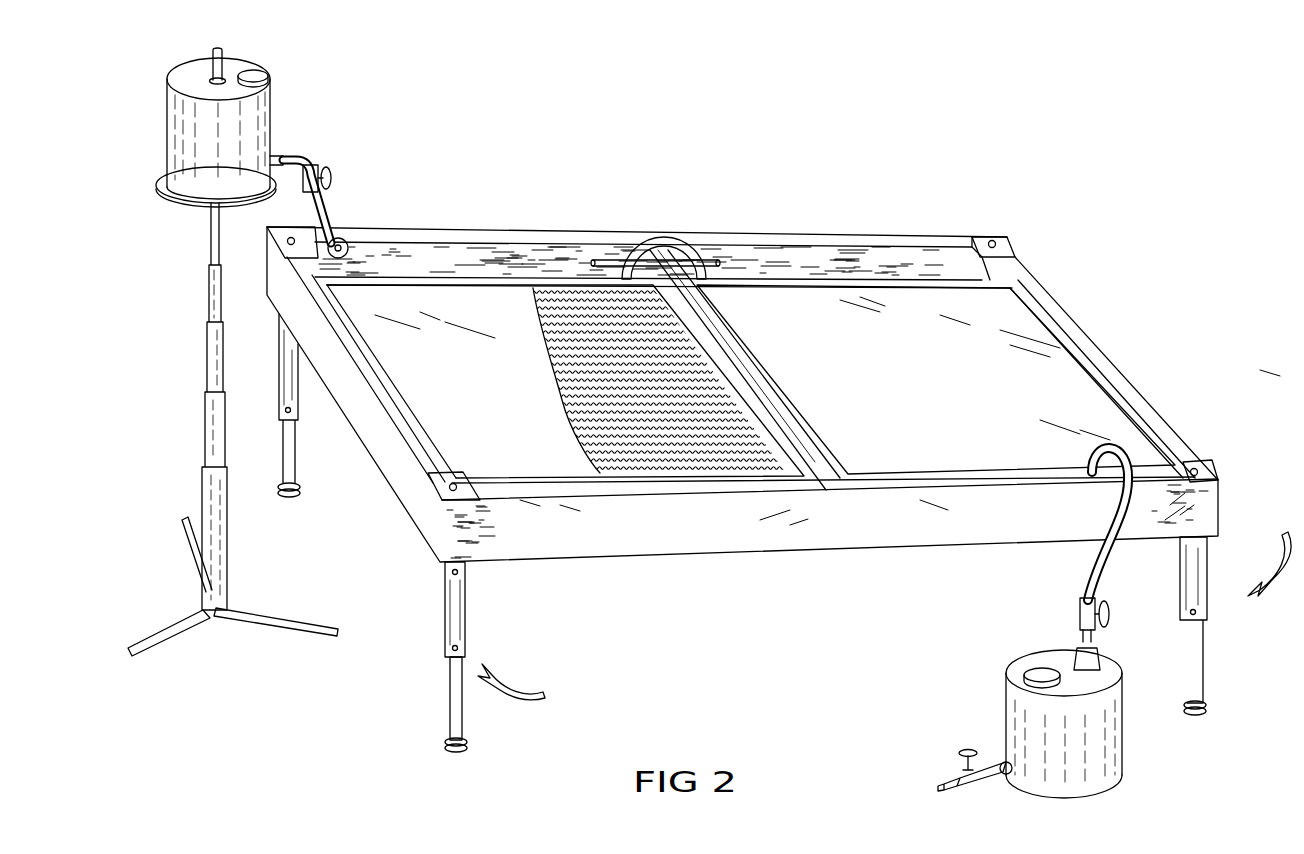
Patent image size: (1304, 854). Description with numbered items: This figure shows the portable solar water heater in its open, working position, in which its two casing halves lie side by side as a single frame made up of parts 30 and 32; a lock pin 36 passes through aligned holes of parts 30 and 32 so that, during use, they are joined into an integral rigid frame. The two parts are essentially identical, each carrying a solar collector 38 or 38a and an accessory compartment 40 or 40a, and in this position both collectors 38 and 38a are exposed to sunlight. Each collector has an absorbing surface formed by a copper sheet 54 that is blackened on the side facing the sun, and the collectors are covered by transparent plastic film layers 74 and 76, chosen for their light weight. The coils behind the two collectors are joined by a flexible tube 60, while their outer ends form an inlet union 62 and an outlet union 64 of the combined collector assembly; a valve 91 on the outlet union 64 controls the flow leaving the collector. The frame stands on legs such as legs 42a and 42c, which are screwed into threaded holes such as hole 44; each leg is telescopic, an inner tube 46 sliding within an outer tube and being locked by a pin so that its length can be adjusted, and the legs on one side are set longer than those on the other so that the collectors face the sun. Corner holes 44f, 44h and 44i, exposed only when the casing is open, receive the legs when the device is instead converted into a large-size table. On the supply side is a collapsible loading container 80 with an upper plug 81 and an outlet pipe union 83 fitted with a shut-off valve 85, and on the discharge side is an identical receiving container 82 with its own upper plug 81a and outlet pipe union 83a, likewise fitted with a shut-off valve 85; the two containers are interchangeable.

The frame part 30 is at (572, 238).
The frame part 32 is at (920, 240).
The lock pin 36 is at (608, 262).
The solar collector 38 is at (483, 303).
The solar collector 38a is at (818, 310).
The accessory compartment 40 is at (428, 257).
The accessory compartment 40a is at (745, 260).
The leg 42a is at (514, 676).
The leg 42c is at (1276, 548).
The threaded hole 44 is at (462, 597).
The corner hole 44f is at (480, 505).
The corner hole 44h is at (998, 245).
The corner hole 44i is at (1196, 470).
The tube 46 is at (460, 700).
The copper sheet 54 is at (690, 440).
The flexible tube 60 is at (678, 247).
The inlet union 62 is at (347, 254).
The outlet union 64 is at (1078, 574).
The plastic film layer 74 is at (540, 452).
The plastic film layer 76 is at (1040, 335).
The loading container 80 is at (190, 72).
The upper plug 81 is at (262, 70).
The upper plug 81a is at (1040, 672).
The receiving container 82 is at (1122, 772).
The outlet pipe union 83 is at (300, 160).
The outlet pipe union 83a is at (1010, 762).
The shut-off valve 85 is at (330, 178).
The valve 91 is at (1105, 612).